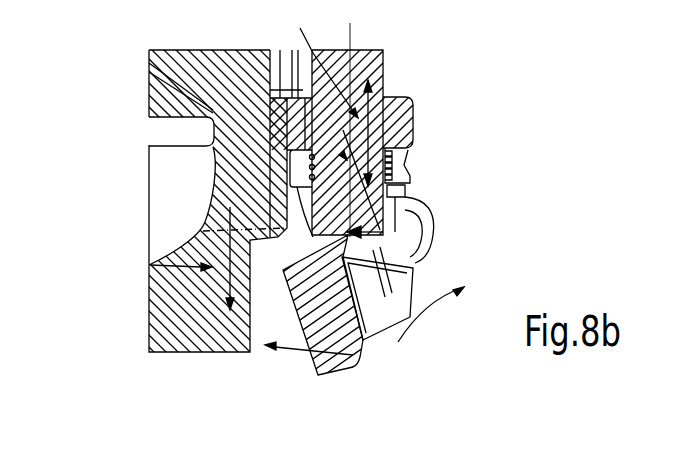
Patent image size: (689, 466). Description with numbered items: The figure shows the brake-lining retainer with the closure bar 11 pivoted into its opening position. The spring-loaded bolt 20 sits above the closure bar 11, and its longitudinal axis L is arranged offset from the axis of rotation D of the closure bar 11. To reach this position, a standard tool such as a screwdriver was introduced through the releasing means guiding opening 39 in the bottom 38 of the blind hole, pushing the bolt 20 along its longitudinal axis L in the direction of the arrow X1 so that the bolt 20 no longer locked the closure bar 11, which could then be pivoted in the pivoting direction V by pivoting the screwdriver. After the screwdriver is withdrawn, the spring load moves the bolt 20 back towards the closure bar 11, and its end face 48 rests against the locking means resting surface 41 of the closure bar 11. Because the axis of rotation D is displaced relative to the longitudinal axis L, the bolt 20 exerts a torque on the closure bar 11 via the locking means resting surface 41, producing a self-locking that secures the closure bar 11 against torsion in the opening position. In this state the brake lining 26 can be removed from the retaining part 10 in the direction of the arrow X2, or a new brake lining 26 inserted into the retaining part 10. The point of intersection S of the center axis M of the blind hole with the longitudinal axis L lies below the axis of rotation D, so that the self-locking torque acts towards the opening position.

The retaining part 10 is at (173, 50).
The closure bar 11 is at (333, 373).
The spring-loaded bolt 20 is at (383, 70).
The brake lining 26 is at (150, 265).
The bottom of the blind hole 38 is at (420, 232).
The releasing means guiding opening 39 is at (432, 273).
The locking means resting surface 41 is at (300, 357).
The end face 48 is at (400, 215).
The point of intersection S is at (288, 110).
The axis of rotation D is at (336, 118).
The longitudinal axis L is at (350, 33).
The center axis M is at (405, 227).
The pivoting direction V is at (398, 342).
The direction of displacement X1 is at (378, 125).
The removal direction X2 is at (232, 277).